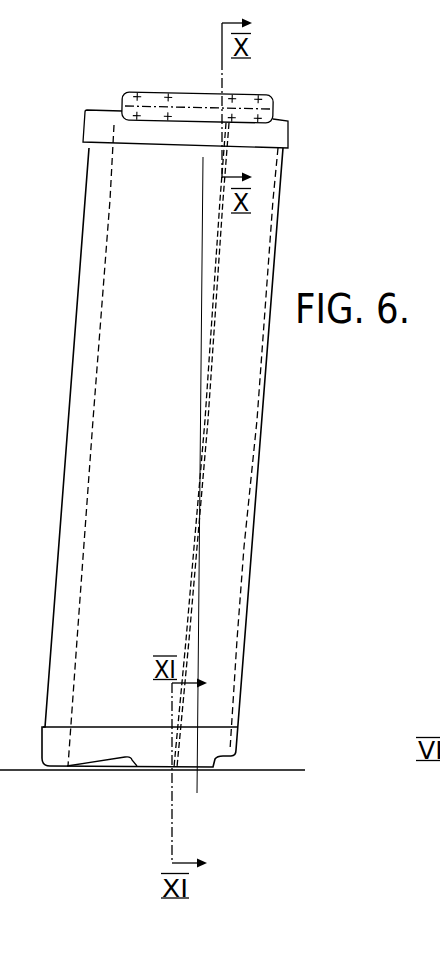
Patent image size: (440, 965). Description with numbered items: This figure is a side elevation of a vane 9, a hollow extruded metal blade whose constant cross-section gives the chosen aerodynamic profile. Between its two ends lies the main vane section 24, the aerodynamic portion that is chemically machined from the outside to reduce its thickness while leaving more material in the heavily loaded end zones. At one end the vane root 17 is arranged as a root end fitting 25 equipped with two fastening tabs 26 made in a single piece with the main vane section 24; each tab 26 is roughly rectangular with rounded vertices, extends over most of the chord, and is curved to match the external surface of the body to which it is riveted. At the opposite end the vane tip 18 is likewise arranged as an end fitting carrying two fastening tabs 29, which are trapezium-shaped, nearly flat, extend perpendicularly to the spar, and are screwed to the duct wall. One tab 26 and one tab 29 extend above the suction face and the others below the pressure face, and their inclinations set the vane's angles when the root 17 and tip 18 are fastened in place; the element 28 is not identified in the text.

The vane 9 is at (262, 517).
The vane root 17 is at (119, 74).
The vane tip 18 is at (256, 732).
The main vane section 24 is at (110, 375).
The root end fitting 25 is at (125, 130).
The fastening tab 26 is at (155, 93).
The lug 28 is at (90, 740).
The fastening tab 29 is at (152, 770).